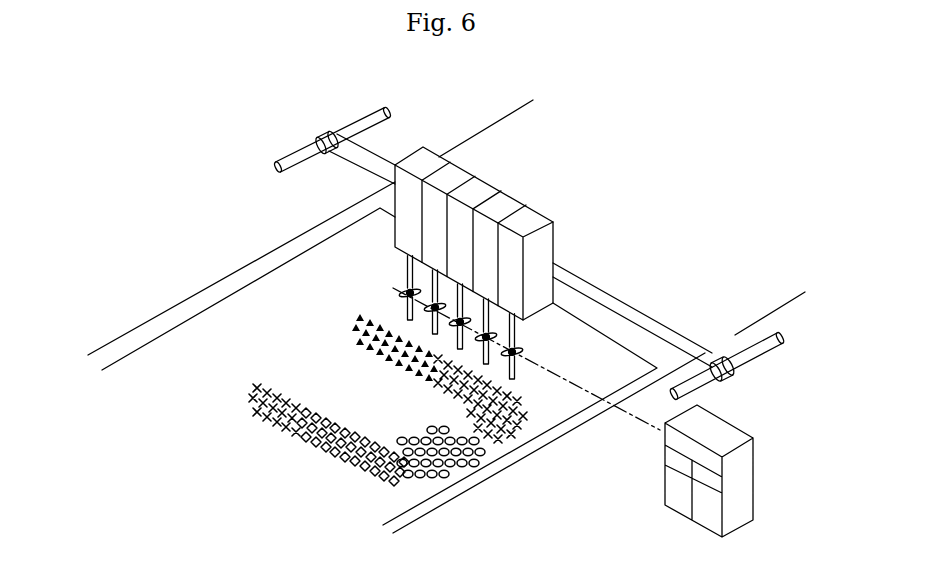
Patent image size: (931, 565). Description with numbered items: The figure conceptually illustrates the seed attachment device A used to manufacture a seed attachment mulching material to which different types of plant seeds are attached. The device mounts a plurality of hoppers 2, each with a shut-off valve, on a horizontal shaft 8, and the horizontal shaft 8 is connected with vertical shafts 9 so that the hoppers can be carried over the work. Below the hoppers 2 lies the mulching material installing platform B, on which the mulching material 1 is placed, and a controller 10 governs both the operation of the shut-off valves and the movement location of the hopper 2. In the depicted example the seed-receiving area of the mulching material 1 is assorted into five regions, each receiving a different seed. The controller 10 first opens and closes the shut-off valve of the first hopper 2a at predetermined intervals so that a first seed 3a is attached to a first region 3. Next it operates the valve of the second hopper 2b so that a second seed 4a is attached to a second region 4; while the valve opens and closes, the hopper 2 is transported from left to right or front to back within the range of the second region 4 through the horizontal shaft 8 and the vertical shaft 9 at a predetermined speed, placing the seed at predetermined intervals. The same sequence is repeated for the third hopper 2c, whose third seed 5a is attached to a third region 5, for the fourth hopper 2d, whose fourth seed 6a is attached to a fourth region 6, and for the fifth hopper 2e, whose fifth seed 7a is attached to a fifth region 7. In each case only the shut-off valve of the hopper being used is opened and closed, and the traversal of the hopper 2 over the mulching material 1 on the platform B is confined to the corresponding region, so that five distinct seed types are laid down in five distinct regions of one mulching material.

The mulching material 1 is at (210, 373).
The hoppers 2 is at (477, 118).
The first hopper 2a is at (448, 155).
The second hopper 2b is at (466, 172).
The third hopper 2c is at (490, 190).
The fourth hopper 2d is at (512, 203).
The fifth hopper 2e is at (537, 216).
The first region 3 is at (356, 323).
The first seed 3a is at (178, 282).
The second region 4 is at (522, 418).
The second seed 4a is at (535, 482).
The third region 5 is at (458, 465).
The third seed 5a is at (460, 530).
The fourth region 6 is at (365, 472).
The fourth seed 6a is at (330, 478).
The fifth region 7 is at (290, 423).
The fifth seed 7a is at (253, 439).
The horizontal shaft 8 is at (650, 317).
The vertical shaft 9 is at (705, 378).
The controller 10 is at (745, 485).
The seed attachment device A is at (396, 150).
The mulching material installing platform B is at (276, 238).